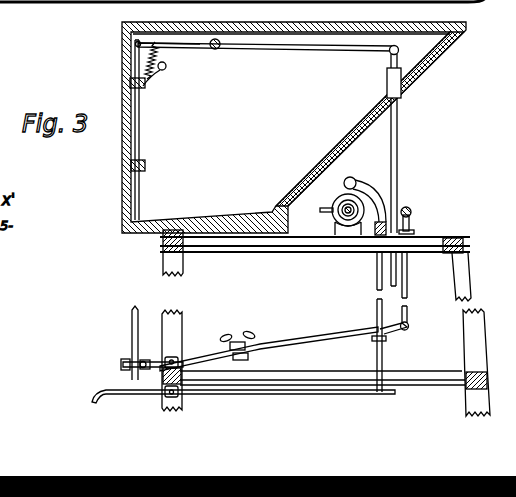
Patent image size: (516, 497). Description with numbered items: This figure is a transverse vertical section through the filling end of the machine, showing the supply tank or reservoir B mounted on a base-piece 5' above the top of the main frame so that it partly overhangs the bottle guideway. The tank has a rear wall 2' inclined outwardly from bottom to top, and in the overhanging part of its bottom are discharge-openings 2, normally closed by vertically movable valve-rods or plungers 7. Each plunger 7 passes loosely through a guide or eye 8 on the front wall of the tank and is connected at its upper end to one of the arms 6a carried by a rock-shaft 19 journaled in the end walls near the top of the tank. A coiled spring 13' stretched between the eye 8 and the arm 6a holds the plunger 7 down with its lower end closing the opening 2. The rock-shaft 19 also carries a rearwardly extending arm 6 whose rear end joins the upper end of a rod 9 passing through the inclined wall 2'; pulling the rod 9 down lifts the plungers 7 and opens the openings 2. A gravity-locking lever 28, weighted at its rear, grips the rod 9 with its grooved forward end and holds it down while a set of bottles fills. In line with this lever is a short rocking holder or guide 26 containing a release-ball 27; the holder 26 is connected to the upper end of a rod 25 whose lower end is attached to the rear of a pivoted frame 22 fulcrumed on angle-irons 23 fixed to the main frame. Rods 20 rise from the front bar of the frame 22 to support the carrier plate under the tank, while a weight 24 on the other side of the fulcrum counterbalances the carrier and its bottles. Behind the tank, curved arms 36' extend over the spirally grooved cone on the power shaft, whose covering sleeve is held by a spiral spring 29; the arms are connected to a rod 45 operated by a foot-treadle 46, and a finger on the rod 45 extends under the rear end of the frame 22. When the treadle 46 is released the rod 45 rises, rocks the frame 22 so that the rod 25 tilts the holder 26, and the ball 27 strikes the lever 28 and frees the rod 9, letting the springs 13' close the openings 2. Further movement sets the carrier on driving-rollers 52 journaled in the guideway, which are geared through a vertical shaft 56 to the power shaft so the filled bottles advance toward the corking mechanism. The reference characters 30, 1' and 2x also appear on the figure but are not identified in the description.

The discharge-openings 2 is at (301, 219).
The rear wall 2' is at (370, 119).
The supply tank or reservoir B is at (291, 87).
The valve-rods or plungers 7 is at (142, 130).
The guides or eyes 8 is at (145, 161).
The rearwardly-extending arm 6 is at (267, 58).
The arms 6a is at (191, 47).
The rock-shaft 19 is at (215, 50).
The coiled springs 13' is at (163, 64).
The rod 9 is at (399, 177).
The curved arms 36' is at (365, 188).
The hub 30 is at (345, 213).
The spiral spring 29 is at (353, 206).
The release-ball 27 is at (410, 210).
The rocking holder or guide 26 is at (411, 220).
The gravity-locking lever 28 is at (414, 230).
The frame 1' is at (325, 269).
The base-piece 5' is at (159, 250).
The rod 45 is at (379, 322).
The rod 25 is at (412, 291).
The rods 20 is at (142, 343).
The driving-rollers 52 is at (151, 376).
The angle-irons 23 is at (171, 360).
The pivoted frame 22 is at (266, 350).
The wing nut 2x is at (230, 345).
The vertical shaft 56 is at (372, 338).
The weight 24 is at (262, 362).
The foot-treadle 46 is at (118, 388).